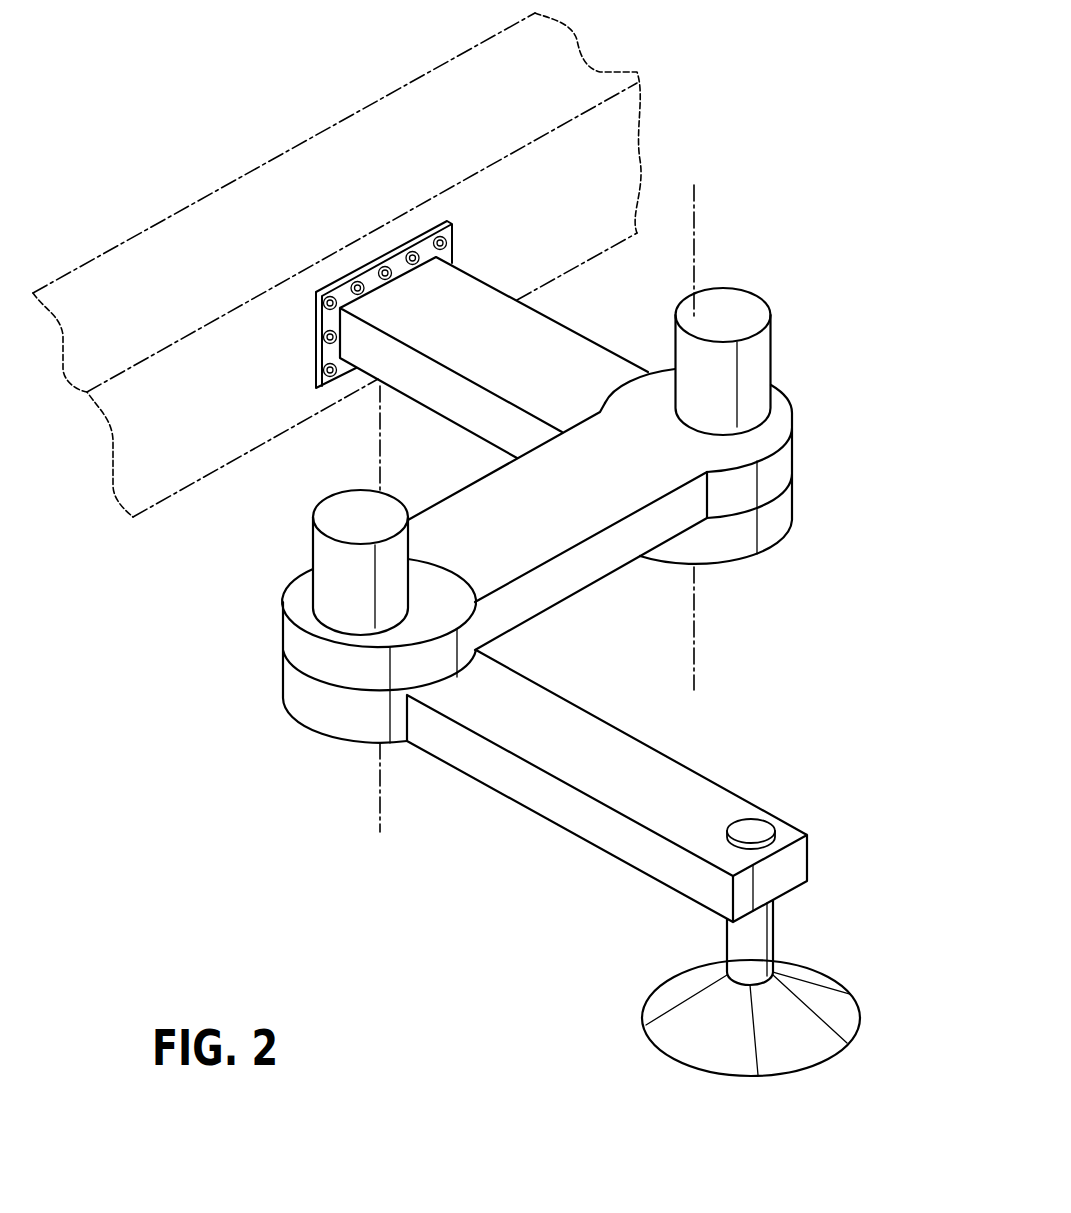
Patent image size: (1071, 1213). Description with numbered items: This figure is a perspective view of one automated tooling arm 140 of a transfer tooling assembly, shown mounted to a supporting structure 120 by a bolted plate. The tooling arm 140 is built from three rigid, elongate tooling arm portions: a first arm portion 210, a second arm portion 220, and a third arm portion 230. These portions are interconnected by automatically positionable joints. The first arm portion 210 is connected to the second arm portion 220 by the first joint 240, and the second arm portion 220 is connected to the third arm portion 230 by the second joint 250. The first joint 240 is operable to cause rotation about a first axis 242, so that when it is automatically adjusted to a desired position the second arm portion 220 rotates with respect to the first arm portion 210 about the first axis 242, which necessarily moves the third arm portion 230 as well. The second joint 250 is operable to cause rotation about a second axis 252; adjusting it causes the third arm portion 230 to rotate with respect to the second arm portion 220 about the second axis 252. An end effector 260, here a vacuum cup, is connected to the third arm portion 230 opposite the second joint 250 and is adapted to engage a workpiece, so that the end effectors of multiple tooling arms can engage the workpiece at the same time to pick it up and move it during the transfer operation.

The support structure / wall panel 120 is at (378, 132).
The automated tooling arm 140 is at (863, 292).
The first arm portion 210 is at (583, 357).
The second arm portion 220 is at (477, 497).
The third arm portion 230 is at (708, 793).
The first joint 240 is at (800, 453).
The first axis 242 is at (697, 241).
The second joint 250 is at (295, 722).
The second axis 252 is at (380, 832).
The end effector 260 is at (853, 975).